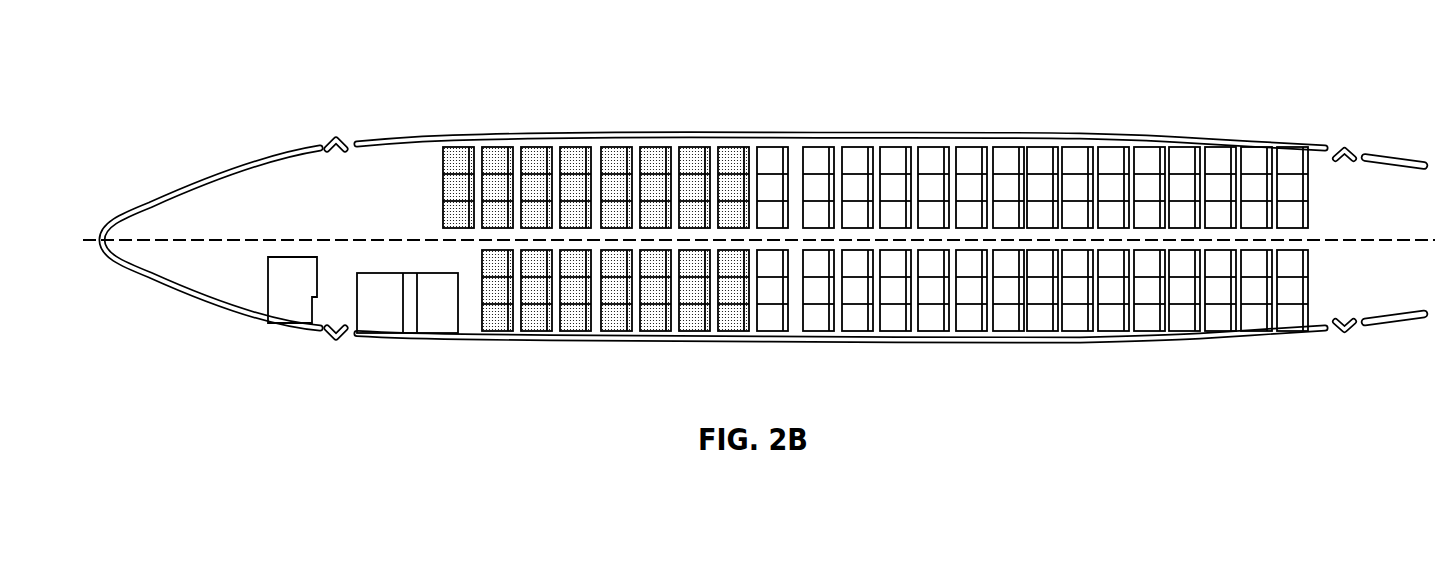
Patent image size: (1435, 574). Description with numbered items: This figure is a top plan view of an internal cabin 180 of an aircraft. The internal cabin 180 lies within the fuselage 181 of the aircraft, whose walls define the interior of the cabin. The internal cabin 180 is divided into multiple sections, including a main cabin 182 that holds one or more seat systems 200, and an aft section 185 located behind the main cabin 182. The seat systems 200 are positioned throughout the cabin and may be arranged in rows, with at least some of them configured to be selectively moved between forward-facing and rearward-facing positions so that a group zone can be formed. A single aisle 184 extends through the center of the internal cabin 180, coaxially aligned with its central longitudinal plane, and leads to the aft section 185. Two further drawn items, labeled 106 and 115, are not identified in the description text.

The internal cabin 180 is at (354, 76).
The fuselage 181 is at (562, 140).
The main cabin 182 is at (498, 156).
The seat system 200 is at (772, 168).
The single aisle 184 is at (895, 234).
The aft section 185 is at (1328, 172).
The lavatory monument 106 is at (458, 300).
The galley monument 115 is at (477, 300).